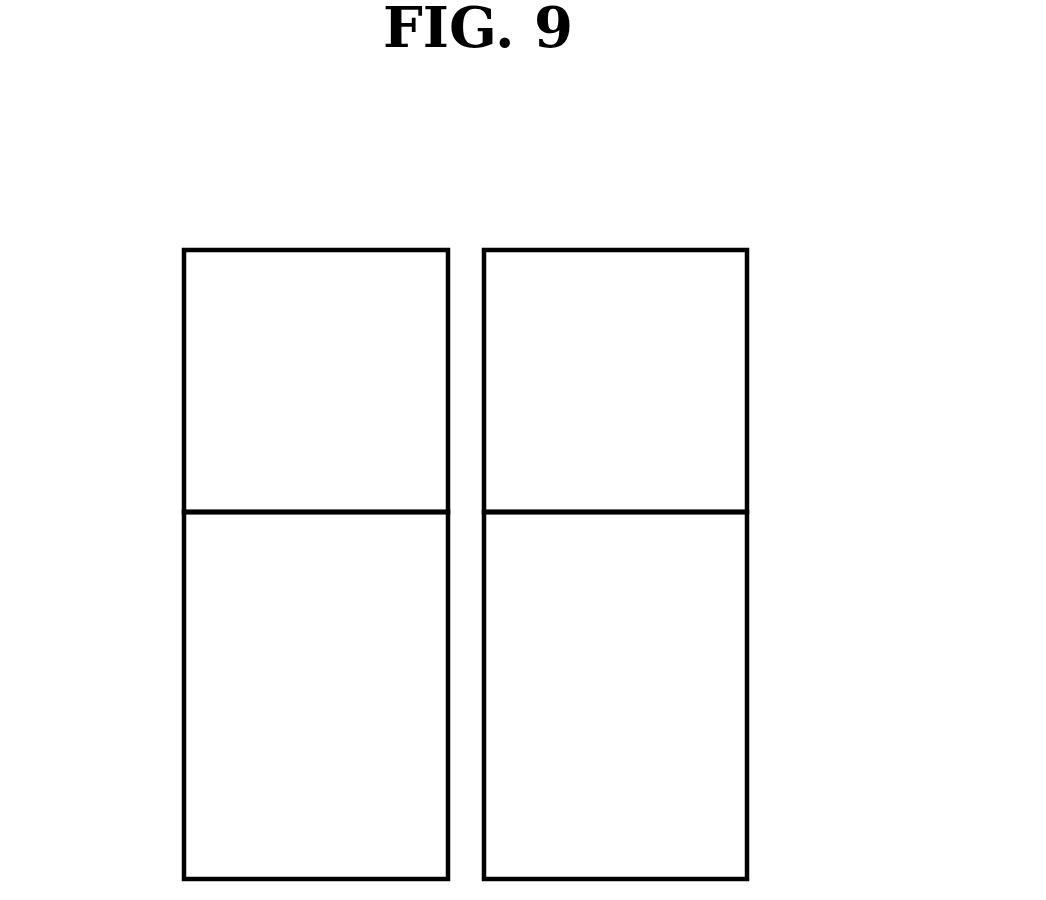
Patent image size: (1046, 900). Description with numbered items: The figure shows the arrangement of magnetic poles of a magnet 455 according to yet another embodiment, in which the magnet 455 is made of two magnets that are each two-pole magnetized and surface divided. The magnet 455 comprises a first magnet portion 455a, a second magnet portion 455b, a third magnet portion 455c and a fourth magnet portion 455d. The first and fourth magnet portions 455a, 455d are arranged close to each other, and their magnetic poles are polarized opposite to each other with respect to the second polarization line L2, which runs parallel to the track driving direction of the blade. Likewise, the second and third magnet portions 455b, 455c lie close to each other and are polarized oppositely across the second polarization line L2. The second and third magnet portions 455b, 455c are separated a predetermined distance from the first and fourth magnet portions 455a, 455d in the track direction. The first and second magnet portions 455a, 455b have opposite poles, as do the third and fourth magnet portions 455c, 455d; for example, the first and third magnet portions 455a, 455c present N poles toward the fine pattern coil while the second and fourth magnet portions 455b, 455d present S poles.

The magnet 455 is at (496, 517).
The first magnet portion 455a is at (738, 412).
The second magnet portion 455b is at (192, 397).
The third magnet portion 455c is at (205, 692).
The fourth magnet portion 455d is at (738, 725).
The second polarization line L2 is at (822, 537).